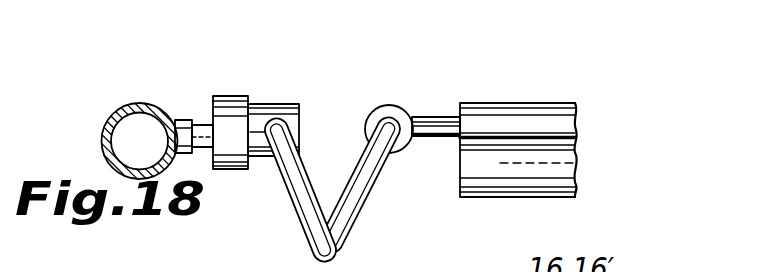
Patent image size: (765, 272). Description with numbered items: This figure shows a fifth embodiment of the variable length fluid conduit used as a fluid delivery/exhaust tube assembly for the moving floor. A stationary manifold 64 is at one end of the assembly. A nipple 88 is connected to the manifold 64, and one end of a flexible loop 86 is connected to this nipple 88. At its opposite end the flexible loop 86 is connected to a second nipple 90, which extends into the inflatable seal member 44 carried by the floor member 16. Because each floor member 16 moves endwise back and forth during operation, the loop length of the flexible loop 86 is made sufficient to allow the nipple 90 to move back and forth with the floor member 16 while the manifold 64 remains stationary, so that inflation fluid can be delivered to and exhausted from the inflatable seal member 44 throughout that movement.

The manifold 64 is at (103, 121).
The nipple 88 is at (262, 112).
The flexible loop 86 is at (299, 146).
The nipple 90 is at (432, 117).
The floor member 16 is at (522, 104).
The inflatable seal member 44 is at (583, 121).